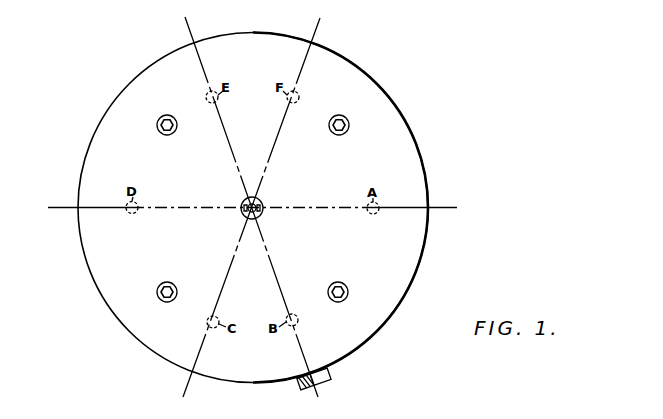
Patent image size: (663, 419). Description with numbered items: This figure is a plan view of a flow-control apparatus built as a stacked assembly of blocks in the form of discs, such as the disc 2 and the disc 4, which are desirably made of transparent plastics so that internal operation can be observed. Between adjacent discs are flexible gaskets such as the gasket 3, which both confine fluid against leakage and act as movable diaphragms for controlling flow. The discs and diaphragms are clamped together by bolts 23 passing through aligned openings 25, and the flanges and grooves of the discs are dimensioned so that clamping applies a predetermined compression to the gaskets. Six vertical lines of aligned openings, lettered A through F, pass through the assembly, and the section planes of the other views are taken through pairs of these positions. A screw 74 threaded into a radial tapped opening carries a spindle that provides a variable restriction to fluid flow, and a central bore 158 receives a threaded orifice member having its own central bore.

The disc 2 is at (48, 178).
The gasket 3 is at (254, 209).
The disc 4 is at (248, 211).
The bolt 23 is at (160, 118).
The aligned opening 25 is at (174, 132).
The screw 74 is at (331, 374).
The central bore 158 is at (258, 204).